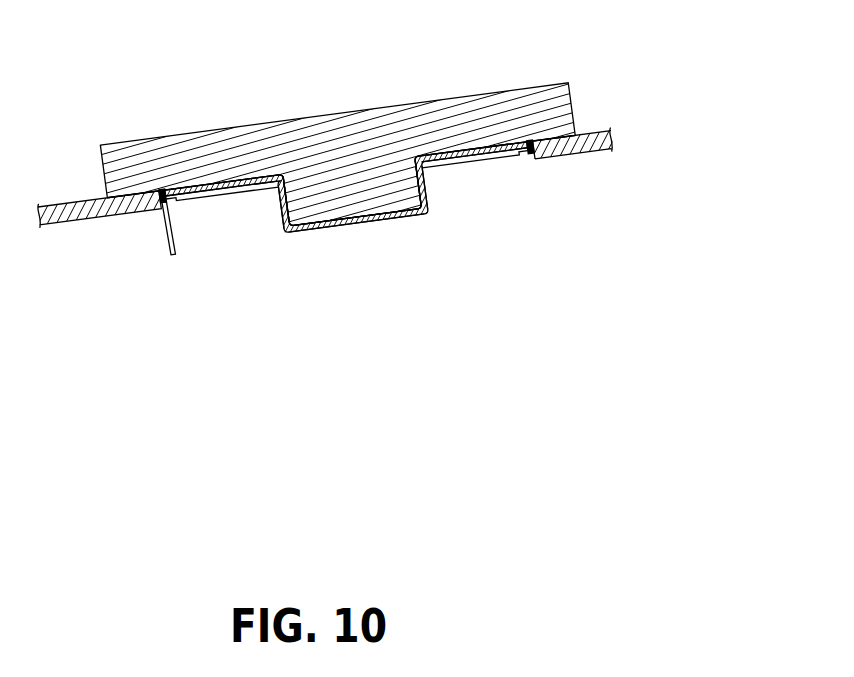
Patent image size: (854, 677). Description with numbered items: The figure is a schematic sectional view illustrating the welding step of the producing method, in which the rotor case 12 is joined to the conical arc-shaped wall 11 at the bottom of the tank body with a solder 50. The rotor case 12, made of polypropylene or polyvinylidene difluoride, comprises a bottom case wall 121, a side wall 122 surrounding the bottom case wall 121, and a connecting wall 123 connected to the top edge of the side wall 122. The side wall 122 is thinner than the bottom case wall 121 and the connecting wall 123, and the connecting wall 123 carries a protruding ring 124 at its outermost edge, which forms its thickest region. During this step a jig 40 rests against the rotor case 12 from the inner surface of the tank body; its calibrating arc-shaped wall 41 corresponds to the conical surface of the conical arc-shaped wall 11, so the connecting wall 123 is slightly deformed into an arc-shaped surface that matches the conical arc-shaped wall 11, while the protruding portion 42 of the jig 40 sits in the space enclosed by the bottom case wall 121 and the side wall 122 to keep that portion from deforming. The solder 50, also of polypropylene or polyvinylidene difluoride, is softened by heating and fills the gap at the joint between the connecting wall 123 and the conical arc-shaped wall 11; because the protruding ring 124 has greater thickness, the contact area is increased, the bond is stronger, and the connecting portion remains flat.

The conical arc-shaped wall 11 is at (581, 140).
The rotor case 12 is at (240, 372).
The bottom case wall 121 is at (332, 226).
The side wall 122 is at (282, 193).
The connecting wall 123 is at (447, 157).
The protruding ring 124 is at (170, 203).
The jig 40 is at (348, 130).
The calibrating arc-shaped wall 41 is at (133, 196).
The protruding portion 42 is at (303, 203).
The solder 50 is at (160, 199).